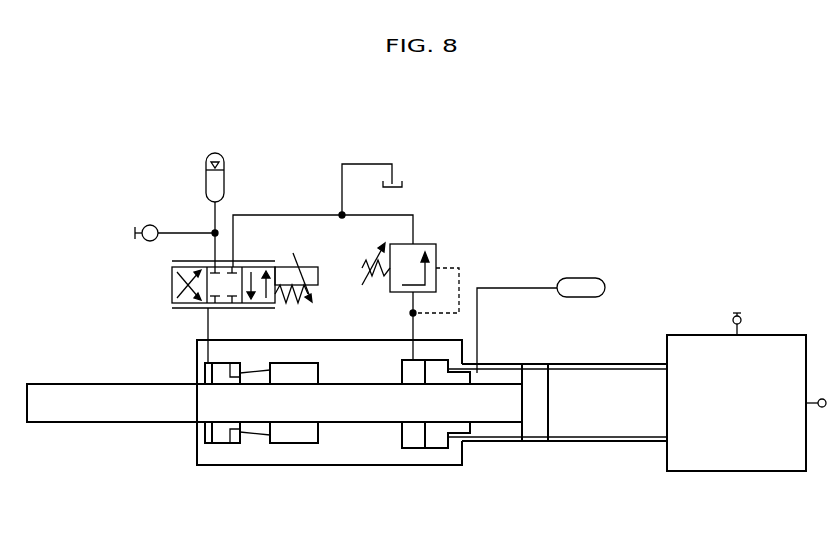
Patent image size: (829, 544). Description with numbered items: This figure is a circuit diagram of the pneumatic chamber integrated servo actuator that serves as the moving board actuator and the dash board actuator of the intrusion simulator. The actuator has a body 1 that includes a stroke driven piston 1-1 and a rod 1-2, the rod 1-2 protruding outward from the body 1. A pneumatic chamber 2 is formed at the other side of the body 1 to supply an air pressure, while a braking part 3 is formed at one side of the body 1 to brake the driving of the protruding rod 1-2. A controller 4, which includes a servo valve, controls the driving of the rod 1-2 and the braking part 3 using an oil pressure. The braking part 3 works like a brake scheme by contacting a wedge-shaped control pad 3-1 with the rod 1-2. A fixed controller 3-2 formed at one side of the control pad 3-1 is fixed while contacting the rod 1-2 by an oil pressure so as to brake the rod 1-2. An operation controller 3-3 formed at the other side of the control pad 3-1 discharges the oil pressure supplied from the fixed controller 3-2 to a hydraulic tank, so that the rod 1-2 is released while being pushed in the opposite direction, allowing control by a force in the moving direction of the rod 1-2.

The body 1 is at (492, 337).
The stroke driven piston 1-1 is at (443, 438).
The rod 1-2 is at (362, 405).
The pneumatic chamber 2 is at (735, 455).
The braking part 3 is at (202, 445).
The control pad 3-1 is at (257, 427).
The fixed controller 3-2 is at (295, 432).
The operation controller 3-3 is at (228, 433).
The controller 4 is at (257, 188).